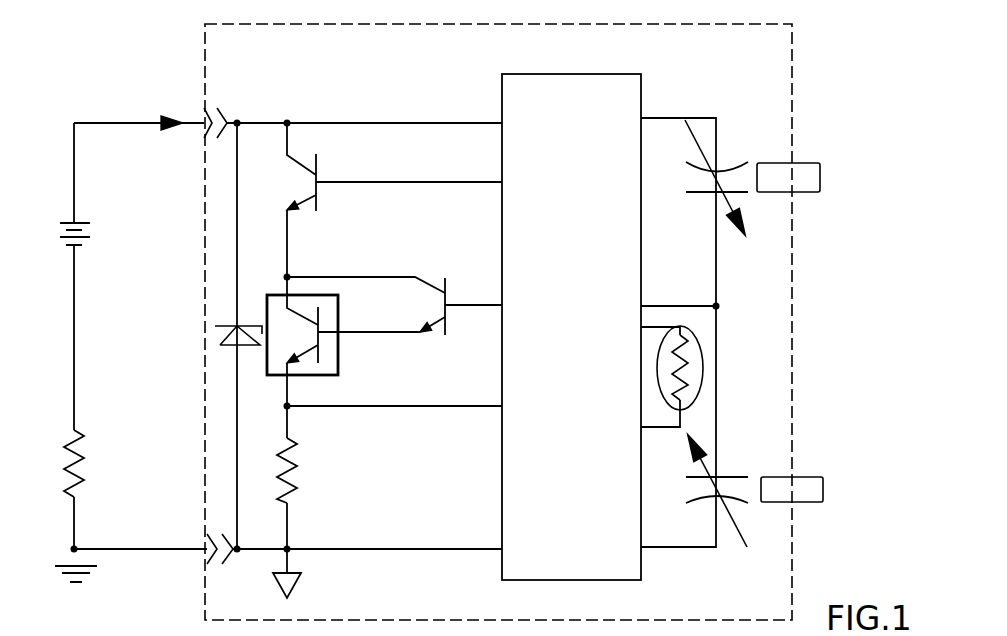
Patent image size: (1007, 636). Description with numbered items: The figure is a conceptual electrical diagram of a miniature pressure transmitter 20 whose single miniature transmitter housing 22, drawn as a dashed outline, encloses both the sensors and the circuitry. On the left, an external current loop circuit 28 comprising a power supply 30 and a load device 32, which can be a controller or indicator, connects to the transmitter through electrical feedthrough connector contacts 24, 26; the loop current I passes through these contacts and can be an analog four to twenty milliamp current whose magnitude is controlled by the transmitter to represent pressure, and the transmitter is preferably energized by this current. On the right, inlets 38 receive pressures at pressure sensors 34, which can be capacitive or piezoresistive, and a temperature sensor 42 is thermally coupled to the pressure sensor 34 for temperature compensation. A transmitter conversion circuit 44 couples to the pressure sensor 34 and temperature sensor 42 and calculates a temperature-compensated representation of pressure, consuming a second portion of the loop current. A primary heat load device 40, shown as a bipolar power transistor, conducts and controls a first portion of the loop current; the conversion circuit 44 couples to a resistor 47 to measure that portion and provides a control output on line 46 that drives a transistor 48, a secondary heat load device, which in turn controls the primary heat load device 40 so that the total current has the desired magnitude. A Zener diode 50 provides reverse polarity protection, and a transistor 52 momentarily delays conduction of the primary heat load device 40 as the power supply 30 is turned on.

The pressure transmitter 20 is at (806, 59).
The transmitter housing 22 is at (337, 25).
The contact 24 is at (224, 117).
The contact 26 is at (221, 540).
The current loop circuit 28 is at (128, 96).
The power supply 30 is at (88, 222).
The load device 32 is at (82, 457).
The pressure sensor 34 is at (720, 165).
The inlet 38 is at (810, 162).
The primary heat load device 40 is at (338, 363).
The temperature sensor 42 is at (672, 380).
The conversion circuit 44 is at (553, 271).
The line 46 is at (500, 303).
The resistor 47 is at (298, 463).
The transistor 48 is at (447, 334).
The Zener diode 50 is at (228, 337).
The transistor 52 is at (317, 163).